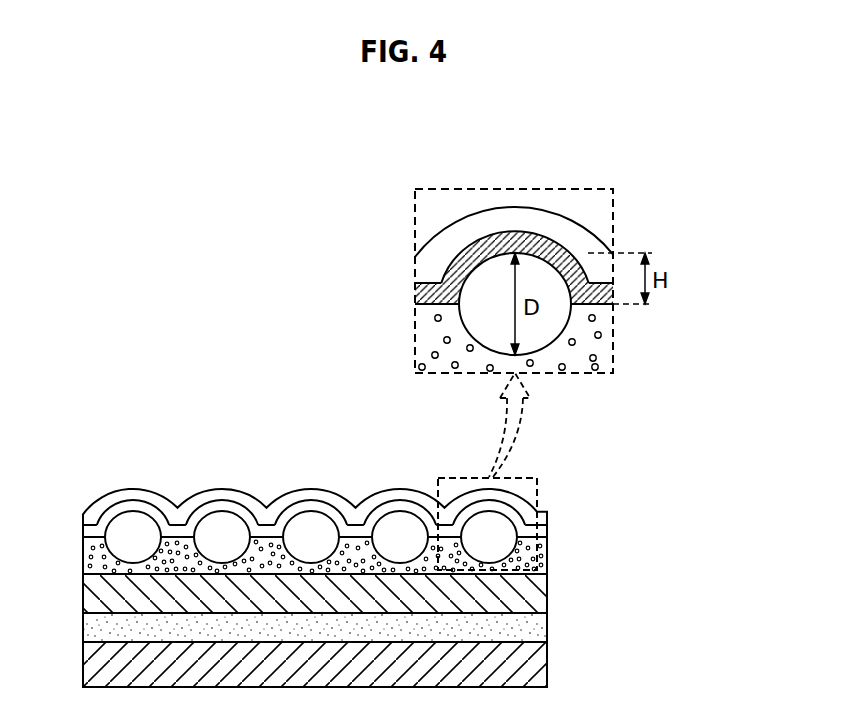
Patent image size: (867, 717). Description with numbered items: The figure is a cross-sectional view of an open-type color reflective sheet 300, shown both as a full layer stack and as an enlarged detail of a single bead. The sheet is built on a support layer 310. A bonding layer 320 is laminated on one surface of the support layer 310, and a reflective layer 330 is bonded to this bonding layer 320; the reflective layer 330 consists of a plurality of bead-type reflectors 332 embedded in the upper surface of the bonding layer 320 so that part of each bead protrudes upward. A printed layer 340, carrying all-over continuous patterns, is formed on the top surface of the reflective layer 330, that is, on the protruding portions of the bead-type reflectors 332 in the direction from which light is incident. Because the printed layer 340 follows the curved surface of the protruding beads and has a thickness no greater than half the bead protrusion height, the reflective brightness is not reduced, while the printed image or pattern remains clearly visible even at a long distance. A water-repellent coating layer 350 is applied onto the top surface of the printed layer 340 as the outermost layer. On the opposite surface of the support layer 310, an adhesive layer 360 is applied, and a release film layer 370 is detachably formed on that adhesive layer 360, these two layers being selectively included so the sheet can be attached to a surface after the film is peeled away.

The open-type color reflective sheet 300 is at (264, 355).
The support layer 310 is at (548, 595).
The bonding layer 320 is at (598, 356).
The reflective layer 330 is at (600, 306).
The bead-type reflector 332 is at (535, 268).
The printed layer 340 is at (415, 290).
The water-repellent coating layer 350 is at (517, 218).
The adhesive layer 360 is at (548, 628).
The release film layer 370 is at (548, 666).